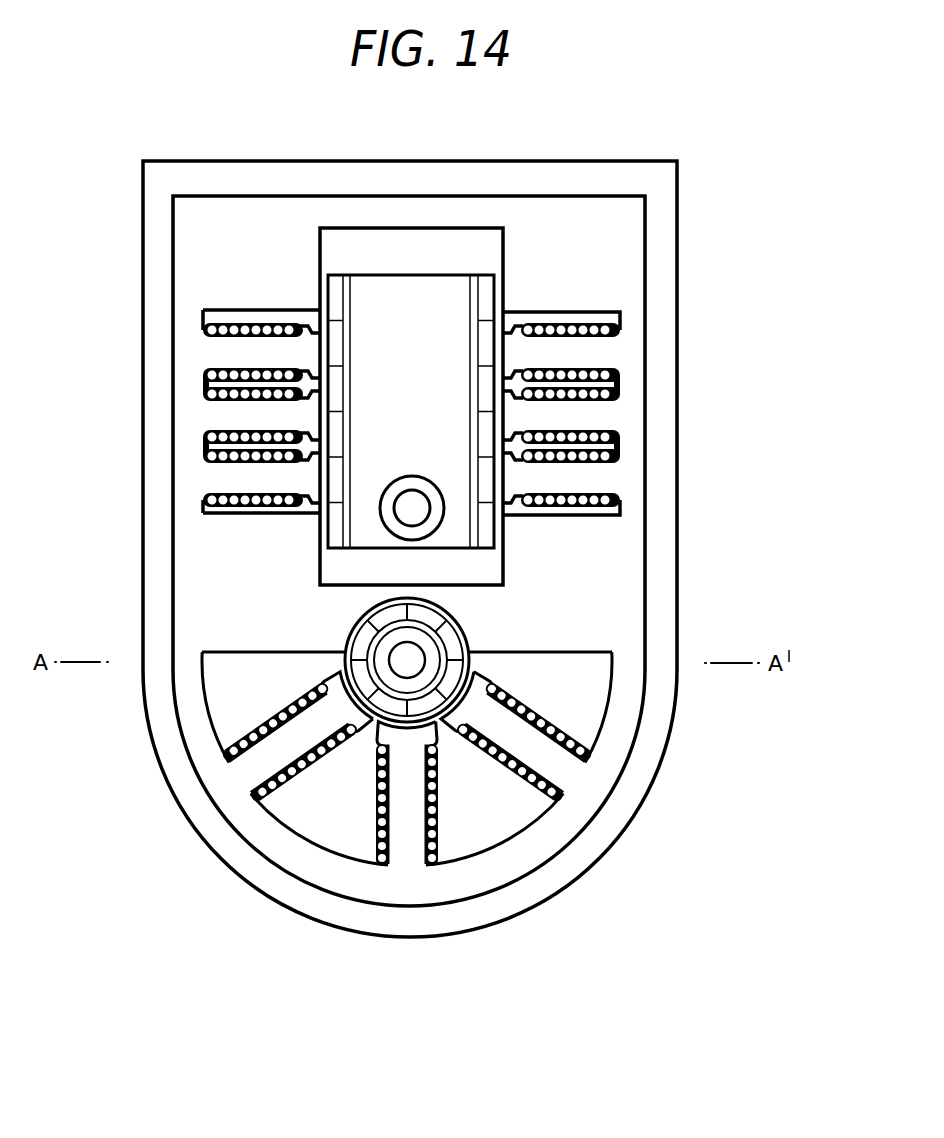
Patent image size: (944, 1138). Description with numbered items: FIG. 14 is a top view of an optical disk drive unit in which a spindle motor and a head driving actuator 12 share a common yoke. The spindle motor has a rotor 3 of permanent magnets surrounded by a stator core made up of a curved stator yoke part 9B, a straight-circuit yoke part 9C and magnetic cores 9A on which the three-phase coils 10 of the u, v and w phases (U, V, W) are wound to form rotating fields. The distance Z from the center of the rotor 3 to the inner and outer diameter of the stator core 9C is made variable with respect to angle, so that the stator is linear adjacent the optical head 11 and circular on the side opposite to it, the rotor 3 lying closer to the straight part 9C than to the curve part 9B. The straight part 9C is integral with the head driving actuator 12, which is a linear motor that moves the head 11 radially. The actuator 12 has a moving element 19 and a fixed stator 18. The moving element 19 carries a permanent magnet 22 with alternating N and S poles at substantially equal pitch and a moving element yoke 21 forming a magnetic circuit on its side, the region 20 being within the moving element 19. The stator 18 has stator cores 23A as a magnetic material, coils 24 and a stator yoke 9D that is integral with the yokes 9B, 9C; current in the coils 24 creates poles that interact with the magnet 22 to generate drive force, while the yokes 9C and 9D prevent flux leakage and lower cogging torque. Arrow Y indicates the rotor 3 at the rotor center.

The rotor 3 is at (660, 770).
The head driving actuator 12 is at (737, 242).
The moving element 19 is at (446, 259).
The movable element 20 is at (423, 396).
The moving element yoke 21 is at (346, 333).
The permanent magnet 22 is at (337, 286).
The optical head 11 is at (423, 478).
The stator yoke 9D is at (188, 408).
The stator 18 is at (624, 366).
The coils 24 is at (578, 322).
The cores 23A is at (595, 486).
The straight-circuit yoke part 9C is at (407, 793).
The magnetic core 9A is at (407, 748).
The curved stator yoke part 9B is at (353, 880).
The coils 10 is at (524, 742).
The v phase V is at (250, 354).
The w phase W is at (250, 413).
The u phase U is at (251, 480).
The rotor rotation direction Y is at (407, 660).
The distance from rotor center to stator core Z is at (205, 686).